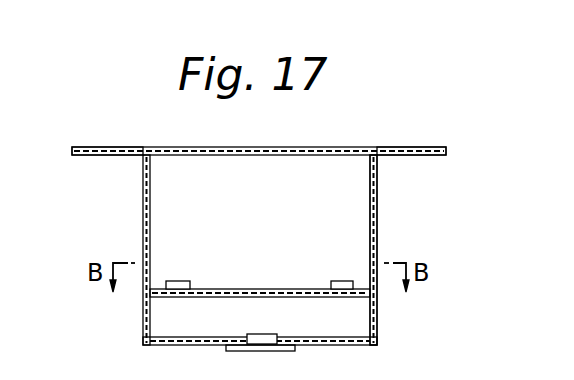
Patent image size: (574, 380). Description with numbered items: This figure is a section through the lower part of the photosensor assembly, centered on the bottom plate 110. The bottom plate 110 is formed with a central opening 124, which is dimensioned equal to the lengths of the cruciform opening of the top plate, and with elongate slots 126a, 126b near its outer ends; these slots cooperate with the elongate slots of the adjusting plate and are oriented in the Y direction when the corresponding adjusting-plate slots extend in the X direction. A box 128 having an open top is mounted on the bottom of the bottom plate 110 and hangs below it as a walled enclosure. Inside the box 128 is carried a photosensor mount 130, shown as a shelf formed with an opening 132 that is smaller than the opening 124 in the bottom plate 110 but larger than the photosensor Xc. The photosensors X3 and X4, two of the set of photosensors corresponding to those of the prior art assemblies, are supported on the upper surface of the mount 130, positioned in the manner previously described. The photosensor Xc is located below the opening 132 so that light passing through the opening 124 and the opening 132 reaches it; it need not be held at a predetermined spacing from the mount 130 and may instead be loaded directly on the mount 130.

The bottom plate 110 is at (352, 147).
The opening 124 is at (258, 147).
The elongate slot 126a is at (103, 147).
The elongate slot 126b is at (413, 147).
The box 128 is at (378, 199).
The photosensor mount 130 is at (340, 297).
The opening 132 is at (245, 289).
The photosensor X3 is at (178, 281).
The photosensor X4 is at (341, 281).
The photosensor Xc is at (262, 335).